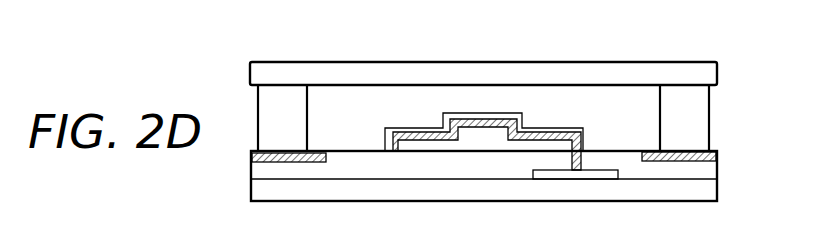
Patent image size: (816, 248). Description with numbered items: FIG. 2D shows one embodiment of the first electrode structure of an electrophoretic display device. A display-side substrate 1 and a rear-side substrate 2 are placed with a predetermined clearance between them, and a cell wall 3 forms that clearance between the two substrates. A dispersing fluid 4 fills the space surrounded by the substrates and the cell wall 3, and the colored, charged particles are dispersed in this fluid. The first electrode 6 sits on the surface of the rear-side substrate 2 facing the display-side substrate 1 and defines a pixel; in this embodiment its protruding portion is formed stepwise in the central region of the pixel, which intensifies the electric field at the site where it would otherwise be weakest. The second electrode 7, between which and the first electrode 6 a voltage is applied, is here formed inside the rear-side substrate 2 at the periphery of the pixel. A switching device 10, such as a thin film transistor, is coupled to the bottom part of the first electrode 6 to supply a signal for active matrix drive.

The display-side substrate 1 is at (680, 71).
The rear-side substrate 2 is at (703, 189).
The cell wall 3 is at (684, 104).
The dispersing fluid 4 is at (596, 100).
The first electrode 6 is at (425, 140).
The second electrode 7 is at (286, 160).
The switching device 10 is at (555, 179).